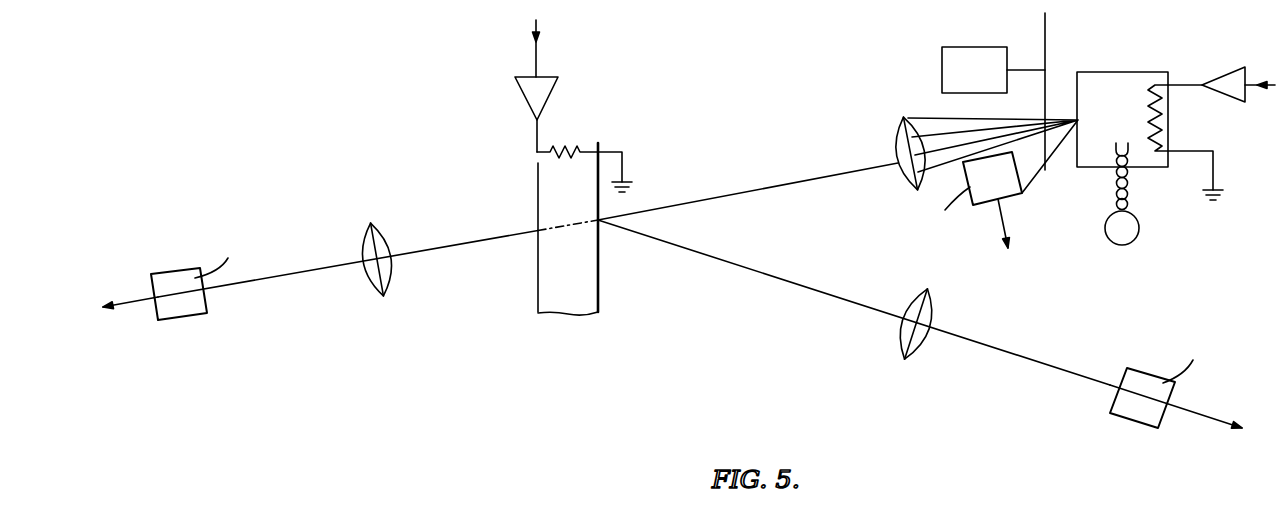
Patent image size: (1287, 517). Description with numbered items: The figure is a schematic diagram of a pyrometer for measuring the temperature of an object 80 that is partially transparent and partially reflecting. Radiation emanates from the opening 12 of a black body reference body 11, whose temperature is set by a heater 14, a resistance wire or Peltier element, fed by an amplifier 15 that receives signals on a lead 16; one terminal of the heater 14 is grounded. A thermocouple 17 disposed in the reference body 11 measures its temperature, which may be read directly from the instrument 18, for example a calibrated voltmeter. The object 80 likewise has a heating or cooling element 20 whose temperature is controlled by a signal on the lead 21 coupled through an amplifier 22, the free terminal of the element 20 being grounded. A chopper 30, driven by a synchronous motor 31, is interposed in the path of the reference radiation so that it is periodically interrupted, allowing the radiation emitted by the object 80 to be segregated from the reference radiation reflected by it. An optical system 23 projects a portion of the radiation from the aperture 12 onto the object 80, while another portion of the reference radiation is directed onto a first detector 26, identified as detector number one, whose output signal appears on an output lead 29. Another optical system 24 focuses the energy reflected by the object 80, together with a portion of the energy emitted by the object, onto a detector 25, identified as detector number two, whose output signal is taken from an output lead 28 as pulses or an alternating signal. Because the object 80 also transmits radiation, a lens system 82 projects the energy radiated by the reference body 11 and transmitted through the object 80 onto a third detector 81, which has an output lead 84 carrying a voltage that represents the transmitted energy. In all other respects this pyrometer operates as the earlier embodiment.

The reference body 11 is at (1127, 75).
The opening 12 is at (1078, 120).
The heater 14 is at (1163, 127).
The amplifier 15 is at (1220, 77).
The lead 16 is at (1263, 87).
The thermocouple 17 is at (1117, 193).
The instrument 18 is at (1110, 240).
The heating or cooling element 20 is at (567, 143).
The lead 21 is at (536, 53).
The amplifier 22 is at (552, 95).
The optical system 23 is at (915, 187).
The optical system 24 is at (902, 352).
The detector 25 is at (1138, 425).
The detector 26 is at (1007, 193).
The output lead 28 is at (1193, 412).
The output lead 29 is at (1000, 235).
The chopper 30 is at (1047, 35).
The synchronous motor 31 is at (942, 82).
The object 80 is at (592, 283).
The third detector 81 is at (180, 317).
The lens system 82 is at (370, 222).
The output lead 84 is at (132, 305).